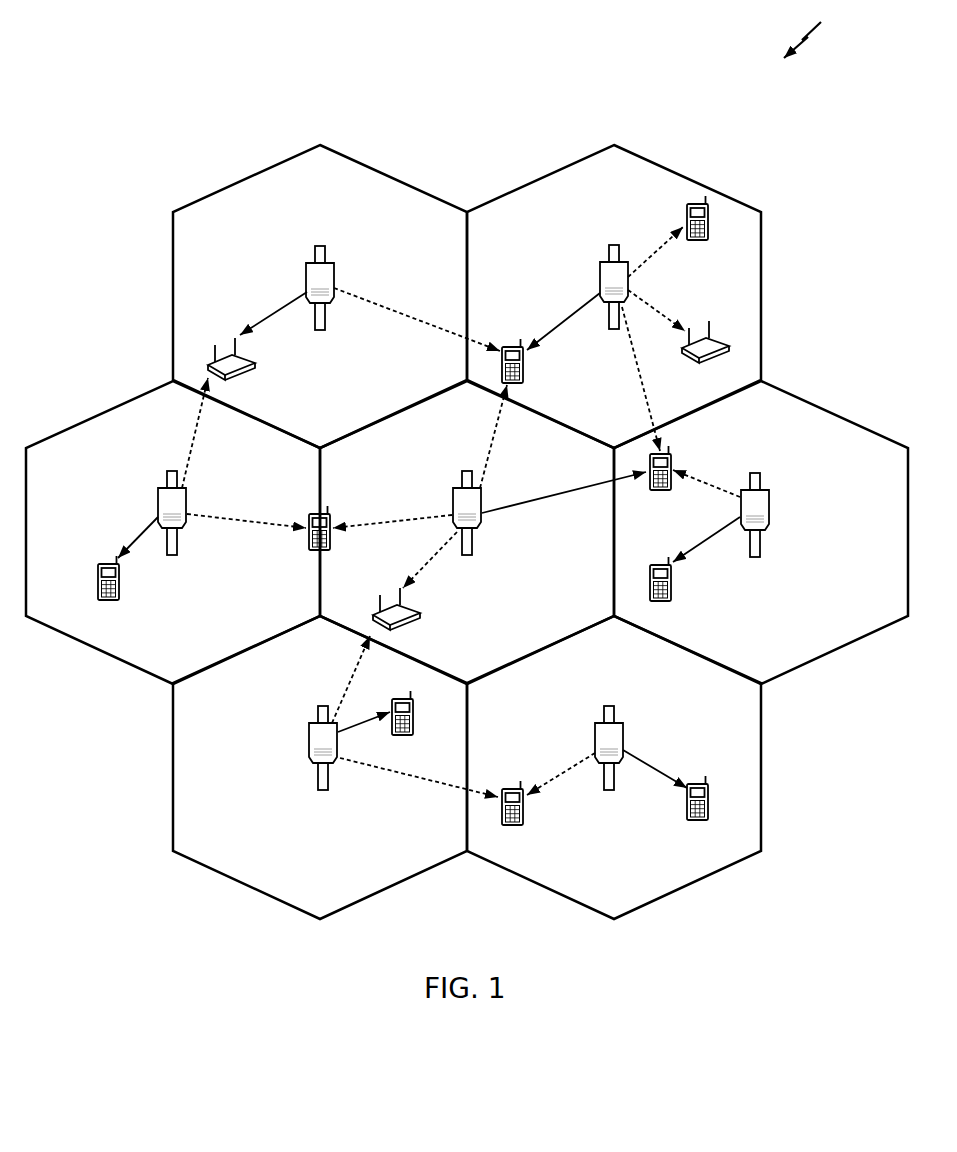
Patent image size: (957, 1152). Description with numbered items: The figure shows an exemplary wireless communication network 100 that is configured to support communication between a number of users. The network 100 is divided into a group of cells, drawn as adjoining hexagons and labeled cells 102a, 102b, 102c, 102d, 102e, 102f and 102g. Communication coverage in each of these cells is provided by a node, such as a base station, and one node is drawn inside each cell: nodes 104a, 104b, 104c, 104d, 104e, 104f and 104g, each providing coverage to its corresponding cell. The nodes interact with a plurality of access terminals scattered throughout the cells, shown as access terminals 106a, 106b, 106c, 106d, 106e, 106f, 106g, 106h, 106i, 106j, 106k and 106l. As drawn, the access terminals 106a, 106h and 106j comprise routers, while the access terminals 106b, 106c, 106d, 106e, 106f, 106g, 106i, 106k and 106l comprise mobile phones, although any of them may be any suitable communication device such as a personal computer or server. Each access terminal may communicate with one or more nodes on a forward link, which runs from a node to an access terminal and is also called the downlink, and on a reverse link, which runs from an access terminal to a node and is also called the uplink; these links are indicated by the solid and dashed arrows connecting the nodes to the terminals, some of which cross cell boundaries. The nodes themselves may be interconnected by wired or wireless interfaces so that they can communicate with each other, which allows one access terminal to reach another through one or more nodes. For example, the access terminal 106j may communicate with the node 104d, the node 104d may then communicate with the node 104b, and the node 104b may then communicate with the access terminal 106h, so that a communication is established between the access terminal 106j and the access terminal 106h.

The wireless communication network 100 is at (820, 30).
The cell 102a is at (254, 180).
The cell 102b is at (703, 167).
The cell 102c is at (98, 414).
The cell 102d is at (490, 421).
The cell 102e is at (834, 415).
The cell 102f is at (173, 770).
The cell 102g is at (762, 770).
The node 104a is at (307, 267).
The node 104b is at (601, 267).
The node 104c is at (159, 498).
The node 104d is at (453, 498).
The node 104e is at (773, 498).
The node 104f is at (310, 729).
The node 104g is at (596, 729).
The access terminal 106a is at (251, 361).
The access terminal 106b is at (512, 347).
The access terminal 106c is at (100, 582).
The access terminal 106d is at (310, 521).
The access terminal 106e is at (671, 465).
The access terminal 106f is at (395, 698).
The access terminal 106g is at (505, 789).
The access terminal 106h is at (738, 332).
The access terminal 106i is at (686, 213).
The access terminal 106j is at (417, 615).
The access terminal 106k is at (657, 563).
The access terminal 106l is at (685, 782).